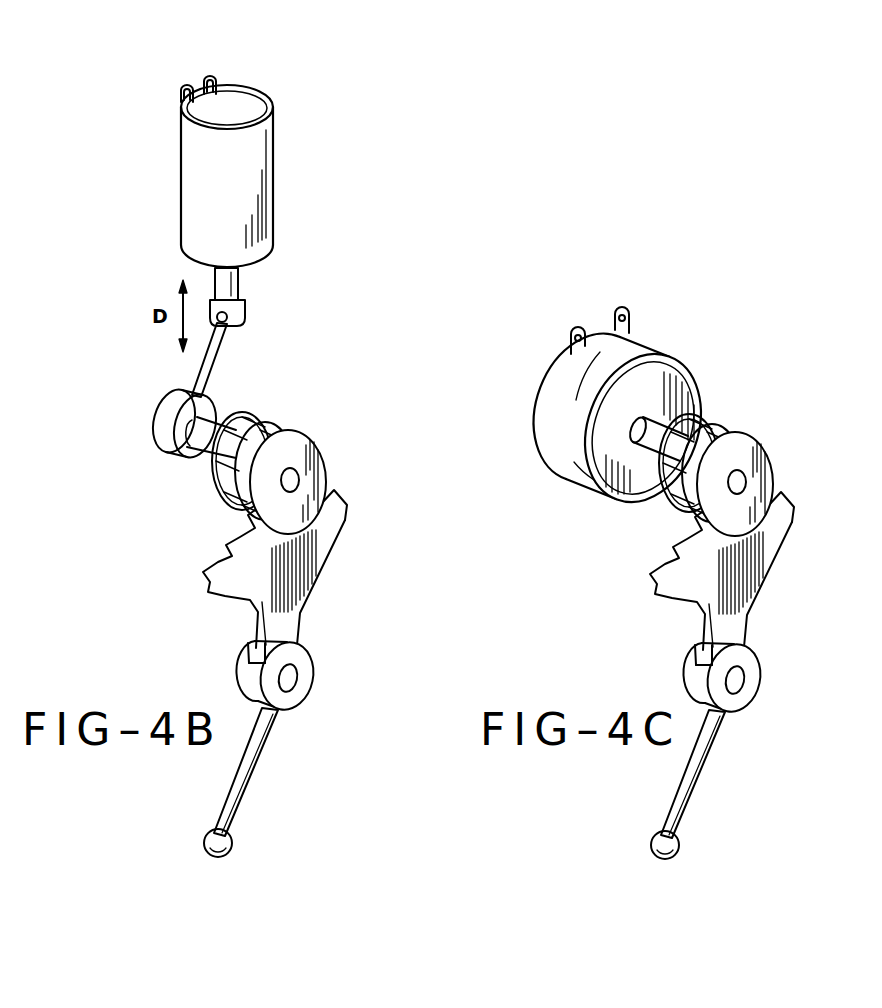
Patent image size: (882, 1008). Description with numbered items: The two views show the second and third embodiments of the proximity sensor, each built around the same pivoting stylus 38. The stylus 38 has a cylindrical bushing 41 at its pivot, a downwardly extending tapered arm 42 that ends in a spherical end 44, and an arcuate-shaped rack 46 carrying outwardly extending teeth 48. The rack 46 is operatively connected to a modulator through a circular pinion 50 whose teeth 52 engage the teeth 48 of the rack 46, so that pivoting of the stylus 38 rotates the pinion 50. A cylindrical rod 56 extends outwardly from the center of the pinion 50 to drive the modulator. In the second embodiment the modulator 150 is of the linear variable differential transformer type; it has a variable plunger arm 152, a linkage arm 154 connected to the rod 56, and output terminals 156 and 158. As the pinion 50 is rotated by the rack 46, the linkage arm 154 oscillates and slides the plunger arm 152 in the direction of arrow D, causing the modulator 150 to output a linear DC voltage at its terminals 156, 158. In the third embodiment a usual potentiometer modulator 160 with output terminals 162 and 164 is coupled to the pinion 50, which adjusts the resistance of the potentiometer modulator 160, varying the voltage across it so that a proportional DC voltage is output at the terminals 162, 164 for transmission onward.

In FIG. 4B, the stylus 38 is at (232, 652).
In FIG. 4C, the stylus 38 is at (639, 645).
In FIG. 4B, the cylindrical bushing 41 is at (301, 672).
In FIG. 4C, the cylindrical bushing 41 is at (753, 677).
In FIG. 4B, the tapered arm 42 is at (251, 760).
In FIG. 4C, the tapered arm 42 is at (720, 774).
In FIG. 4B, the spherical end 44 is at (233, 838).
In FIG. 4C, the spherical end 44 is at (701, 845).
In FIG. 4B, the arcuate-shaped rack 46 is at (306, 564).
In FIG. 4C, the arcuate-shaped rack 46 is at (737, 580).
In FIG. 4B, the teeth 48 is at (343, 506).
In FIG. 4C, the teeth 48 is at (816, 501).
In FIG. 4B, the circular pinion 50 is at (293, 463).
In FIG. 4C, the circular pinion 50 is at (764, 481).
In FIG. 4B, the teeth 52 is at (234, 473).
In FIG. 4C, the teeth 52 is at (666, 480).
In FIG. 4B, the cylindrical rod 56 is at (207, 433).
In FIG. 4C, the cylindrical rod 56 is at (659, 436).
In FIG. 4B, the modulator 150 is at (290, 197).
In FIG. 4B, the variable plunger arm 152 is at (232, 282).
In FIG. 4B, the linkage arm 154 is at (213, 356).
In FIG. 4B, the output terminal 156 is at (212, 82).
In FIG. 4B, the output terminal 158 is at (182, 96).
In FIG. 4C, the potentiometer modulator 160 is at (688, 340).
In FIG. 4C, the output terminal 162 is at (576, 332).
In FIG. 4C, the output terminal 164 is at (624, 308).